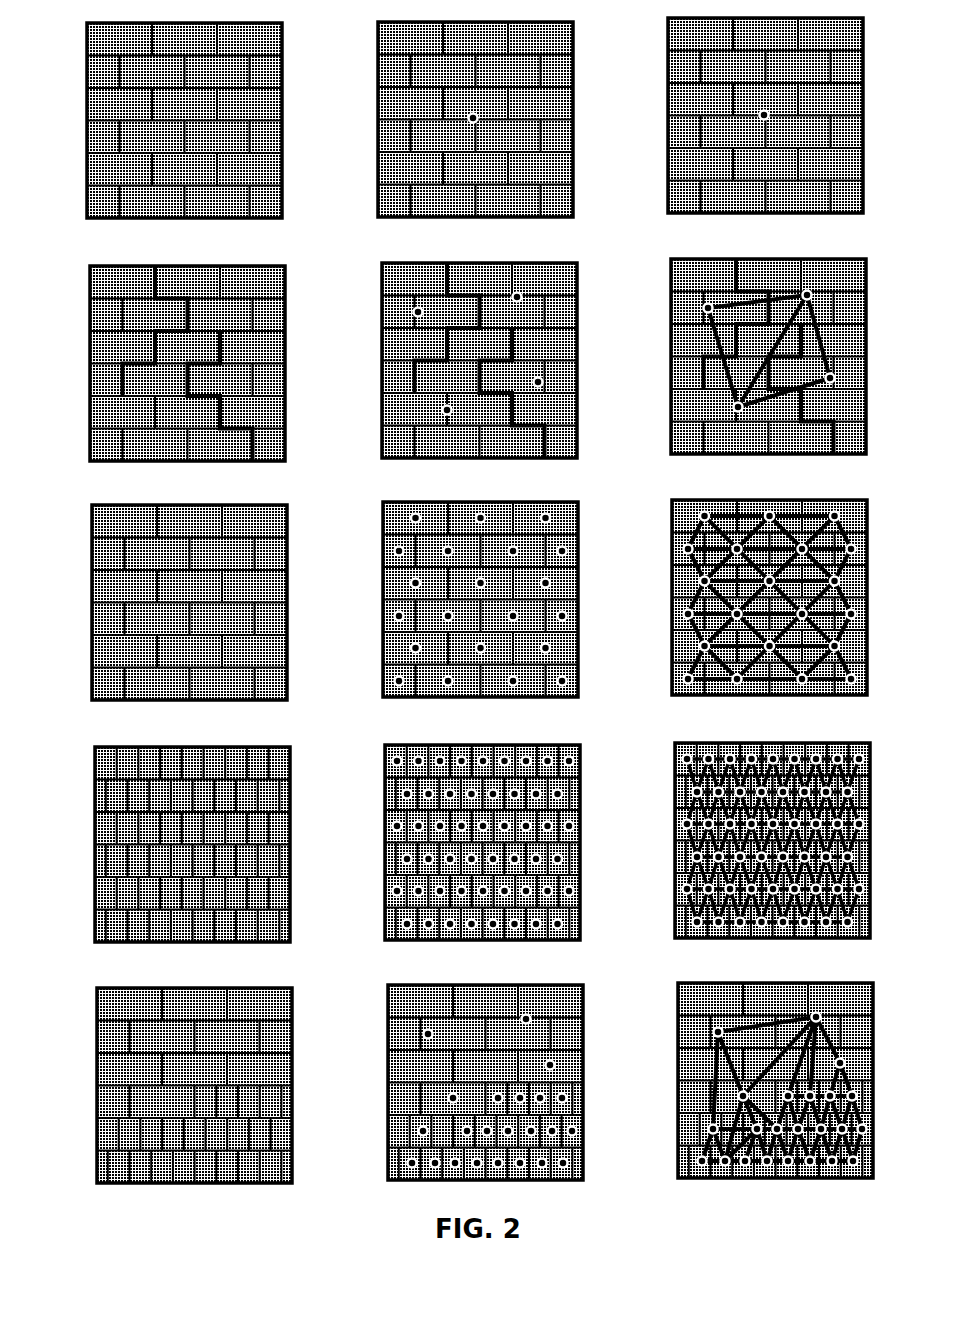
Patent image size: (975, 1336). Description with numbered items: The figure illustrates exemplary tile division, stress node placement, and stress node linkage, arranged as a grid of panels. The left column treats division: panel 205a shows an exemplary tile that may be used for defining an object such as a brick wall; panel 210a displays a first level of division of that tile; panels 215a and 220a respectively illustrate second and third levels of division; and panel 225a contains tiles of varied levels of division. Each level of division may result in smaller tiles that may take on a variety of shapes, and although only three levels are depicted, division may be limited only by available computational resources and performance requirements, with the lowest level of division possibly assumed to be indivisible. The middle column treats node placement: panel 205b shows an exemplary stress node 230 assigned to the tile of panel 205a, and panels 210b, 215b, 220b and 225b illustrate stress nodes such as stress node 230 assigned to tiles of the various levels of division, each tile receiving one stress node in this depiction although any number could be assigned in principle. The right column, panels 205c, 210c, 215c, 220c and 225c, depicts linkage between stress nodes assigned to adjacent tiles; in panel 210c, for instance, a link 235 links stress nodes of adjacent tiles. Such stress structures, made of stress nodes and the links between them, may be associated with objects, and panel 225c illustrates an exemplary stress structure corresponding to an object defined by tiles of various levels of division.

The panel 205a is at (158, 120).
The panel 205b is at (449, 119).
The panel 205c is at (739, 115).
The panel 210a is at (161, 363).
The panel 210b is at (453, 360).
The panel 210c is at (742, 356).
The panel 215a is at (163, 602).
The panel 215b is at (454, 599).
The panel 215c is at (743, 597).
The panel 220a is at (166, 844).
The panel 220b is at (456, 842).
The panel 220c is at (746, 840).
The panel 225a is at (168, 1085).
The panel 225b is at (459, 1082).
The panel 225c is at (749, 1080).
The stress node 230 is at (496, 102).
The link 235 is at (833, 291).